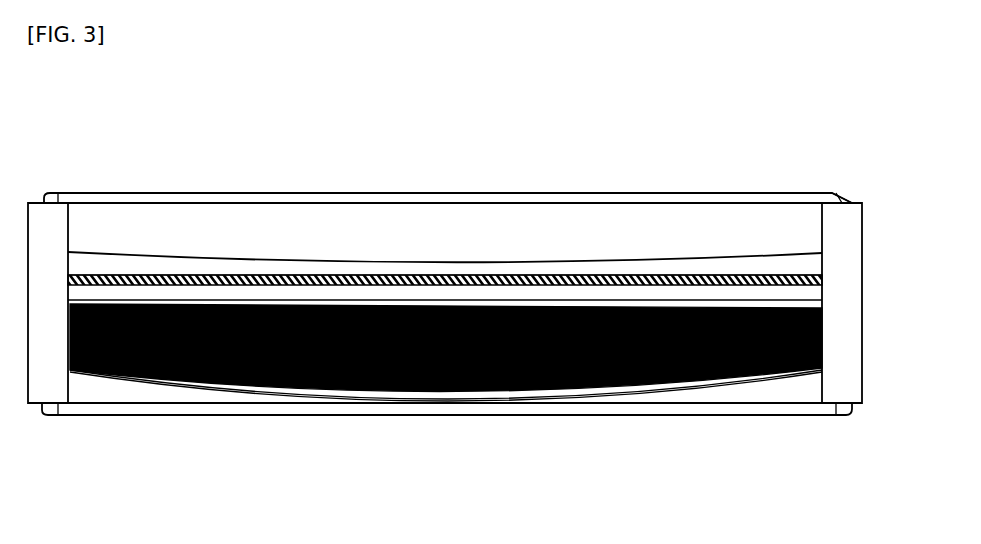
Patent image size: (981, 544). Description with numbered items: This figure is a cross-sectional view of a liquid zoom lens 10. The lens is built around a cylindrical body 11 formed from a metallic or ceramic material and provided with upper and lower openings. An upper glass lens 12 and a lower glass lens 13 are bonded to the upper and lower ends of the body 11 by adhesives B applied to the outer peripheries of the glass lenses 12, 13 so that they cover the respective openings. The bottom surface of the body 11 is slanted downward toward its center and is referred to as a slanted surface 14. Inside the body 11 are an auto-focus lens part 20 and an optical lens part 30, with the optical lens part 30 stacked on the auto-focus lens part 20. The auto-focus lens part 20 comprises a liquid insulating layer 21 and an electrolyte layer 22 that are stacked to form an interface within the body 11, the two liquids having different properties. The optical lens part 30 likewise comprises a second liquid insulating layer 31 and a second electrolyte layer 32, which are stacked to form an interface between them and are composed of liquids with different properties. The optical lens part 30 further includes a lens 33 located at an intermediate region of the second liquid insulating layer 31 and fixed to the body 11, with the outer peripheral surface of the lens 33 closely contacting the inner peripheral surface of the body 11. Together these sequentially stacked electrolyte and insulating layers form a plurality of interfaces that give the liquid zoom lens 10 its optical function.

The liquid zoom lens 10 is at (790, 127).
The cylindrical body 11 is at (862, 300).
The glass lens 12 is at (301, 200).
The glass lens 13 is at (299, 410).
The slanted surface 14 is at (220, 388).
The auto-focus lens part 20 is at (393, 485).
The liquid insulating layer 21 is at (413, 397).
The electrolyte layer 22 is at (469, 378).
The optical lens part 30 is at (555, 128).
The second liquid insulating layer 31 is at (536, 268).
The second electrolyte layer 32 is at (475, 223).
The lens 33 is at (421, 279).
The adhesives B is at (850, 192).